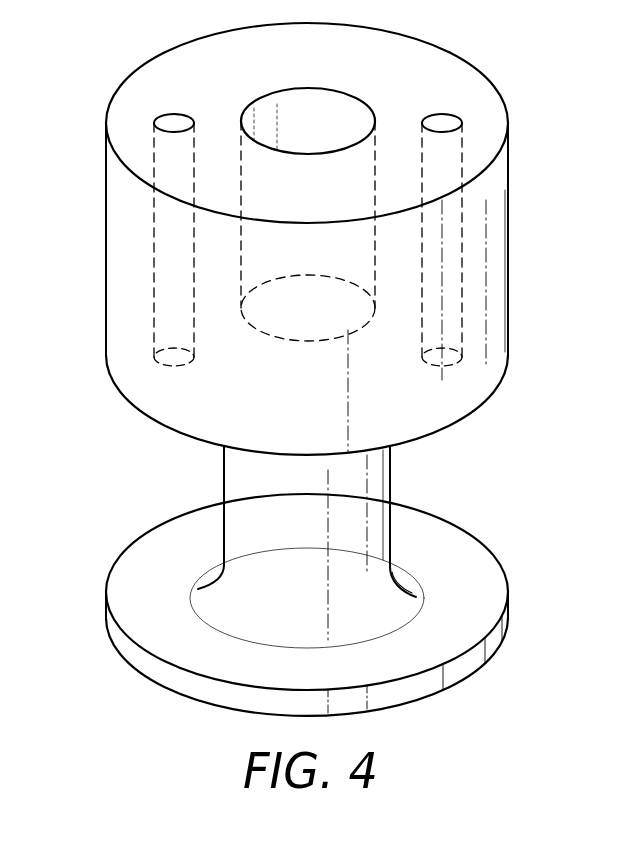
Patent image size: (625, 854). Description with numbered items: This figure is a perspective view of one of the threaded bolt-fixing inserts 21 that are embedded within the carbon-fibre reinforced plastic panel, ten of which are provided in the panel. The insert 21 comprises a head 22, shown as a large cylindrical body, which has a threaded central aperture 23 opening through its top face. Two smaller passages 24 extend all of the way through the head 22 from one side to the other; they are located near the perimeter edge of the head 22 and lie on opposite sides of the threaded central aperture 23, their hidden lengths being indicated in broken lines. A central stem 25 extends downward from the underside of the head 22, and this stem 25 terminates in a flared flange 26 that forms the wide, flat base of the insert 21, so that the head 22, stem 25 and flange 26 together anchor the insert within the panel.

The threaded insert 21 is at (309, 371).
The head 22 is at (508, 288).
The threaded central aperture 23 is at (308, 99).
The smaller passages 24 is at (172, 119).
The central stem 25 is at (224, 476).
The flared flange 26 is at (466, 668).